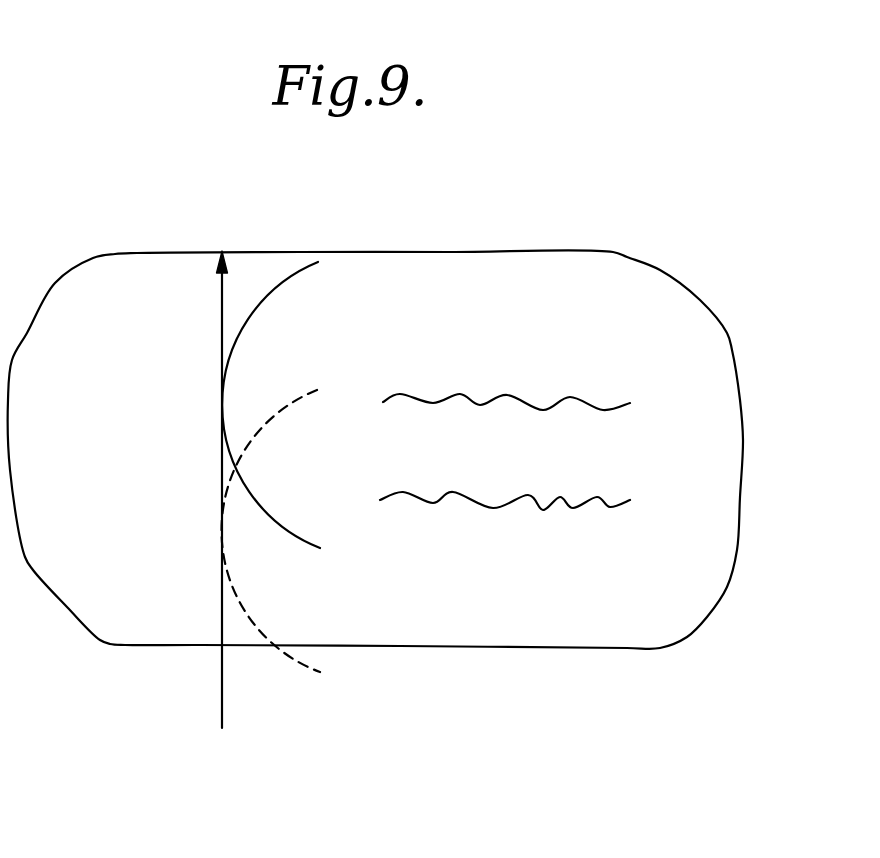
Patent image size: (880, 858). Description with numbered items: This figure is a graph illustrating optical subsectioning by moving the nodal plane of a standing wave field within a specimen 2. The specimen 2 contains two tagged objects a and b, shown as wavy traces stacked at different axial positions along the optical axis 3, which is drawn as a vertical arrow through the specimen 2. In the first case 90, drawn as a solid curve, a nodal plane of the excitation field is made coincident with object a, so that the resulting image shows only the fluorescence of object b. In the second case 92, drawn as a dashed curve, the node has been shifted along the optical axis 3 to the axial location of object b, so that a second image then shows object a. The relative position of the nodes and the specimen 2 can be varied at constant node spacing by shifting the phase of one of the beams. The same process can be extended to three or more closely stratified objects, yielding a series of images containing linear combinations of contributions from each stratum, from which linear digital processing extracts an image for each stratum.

The specimen 2 is at (642, 295).
The optical axis 3 is at (222, 680).
The first case 90 is at (262, 302).
The second case 92 is at (255, 623).
The tagged object a is at (563, 395).
The tagged object b is at (573, 508).